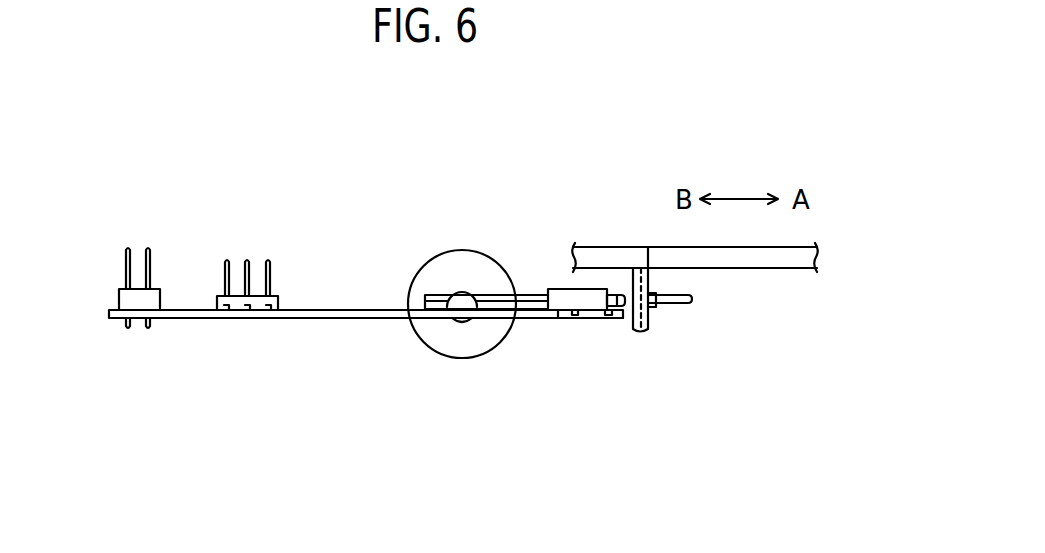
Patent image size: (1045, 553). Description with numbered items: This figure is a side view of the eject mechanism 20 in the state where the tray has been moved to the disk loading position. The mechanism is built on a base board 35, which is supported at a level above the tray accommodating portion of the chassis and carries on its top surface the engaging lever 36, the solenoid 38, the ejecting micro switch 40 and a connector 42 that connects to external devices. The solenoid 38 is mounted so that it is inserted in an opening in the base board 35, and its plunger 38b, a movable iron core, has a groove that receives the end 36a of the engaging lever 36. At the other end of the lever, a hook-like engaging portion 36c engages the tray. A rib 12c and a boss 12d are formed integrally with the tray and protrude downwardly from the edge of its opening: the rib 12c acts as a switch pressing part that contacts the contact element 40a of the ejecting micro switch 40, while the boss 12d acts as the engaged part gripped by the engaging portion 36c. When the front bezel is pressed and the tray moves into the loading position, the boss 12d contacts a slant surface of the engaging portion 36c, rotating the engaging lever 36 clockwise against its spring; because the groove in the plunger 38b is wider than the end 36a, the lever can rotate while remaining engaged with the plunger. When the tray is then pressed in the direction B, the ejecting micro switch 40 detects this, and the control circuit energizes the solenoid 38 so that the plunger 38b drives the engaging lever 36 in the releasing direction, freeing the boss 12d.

The eject mechanism 20 is at (520, 223).
The base board 35 is at (330, 319).
The engaging lever 36 is at (533, 289).
The end of engaging lever 36a is at (424, 319).
The hook-like engaging portion 36c is at (687, 305).
The solenoid actuator 38 is at (483, 345).
The plunger 38b is at (462, 300).
The ejecting micro switch 40 is at (567, 300).
The contact element 40a is at (620, 312).
The connector 42 is at (119, 300).
The rib 12c is at (633, 330).
The boss 12d is at (655, 306).